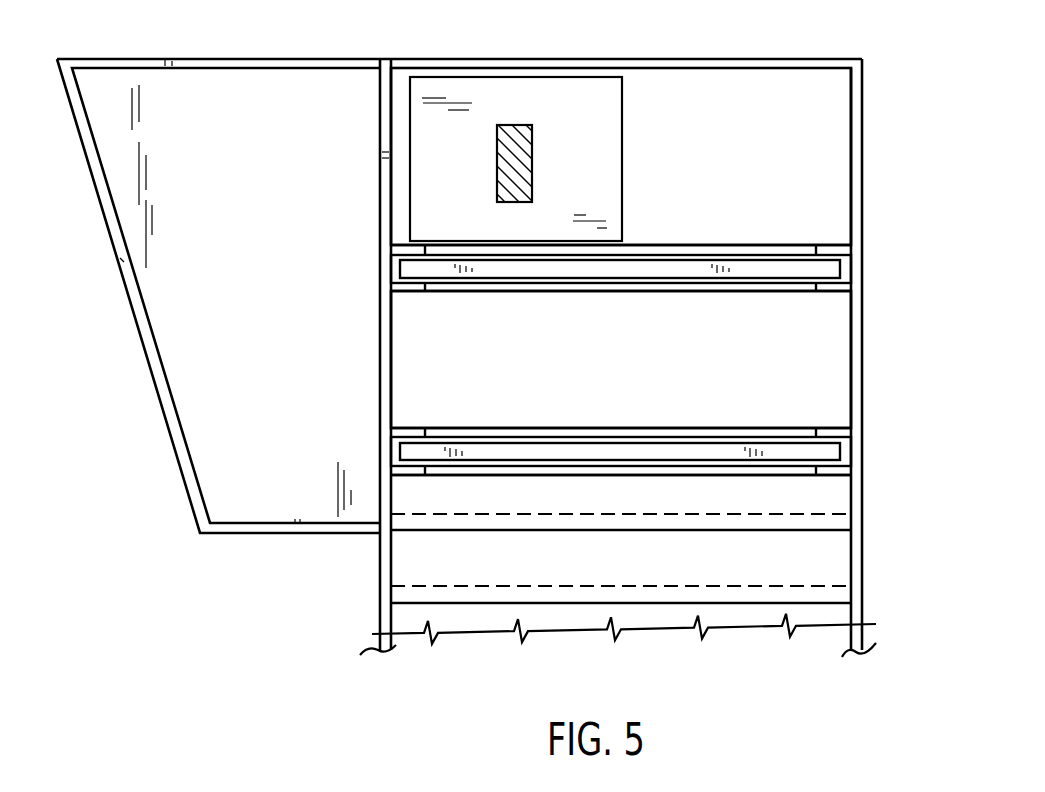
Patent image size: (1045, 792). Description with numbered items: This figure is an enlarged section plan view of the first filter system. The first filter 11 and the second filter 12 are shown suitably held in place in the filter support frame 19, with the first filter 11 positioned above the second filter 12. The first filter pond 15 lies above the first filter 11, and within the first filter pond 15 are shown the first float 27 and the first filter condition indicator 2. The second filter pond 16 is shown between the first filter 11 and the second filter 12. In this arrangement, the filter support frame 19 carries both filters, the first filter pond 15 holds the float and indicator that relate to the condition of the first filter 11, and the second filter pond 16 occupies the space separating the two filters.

The first filter condition indicator 2 is at (520, 127).
The first filter 11 is at (654, 260).
The second filter 12 is at (700, 443).
The first filter pond 15 is at (777, 82).
The second filter pond 16 is at (800, 373).
The filter support frame 19 is at (788, 244).
The first float 27 is at (622, 150).